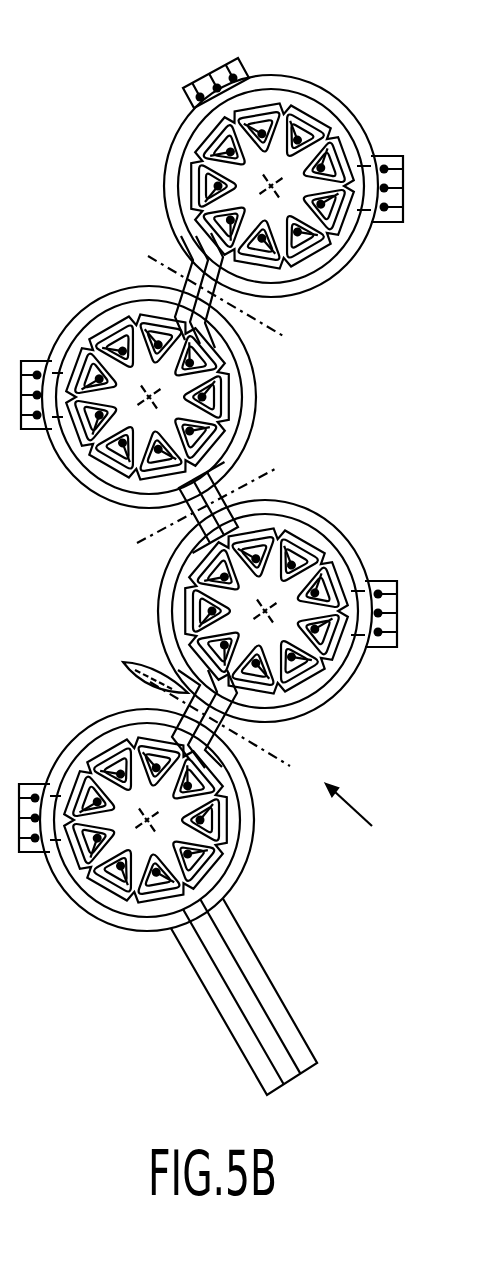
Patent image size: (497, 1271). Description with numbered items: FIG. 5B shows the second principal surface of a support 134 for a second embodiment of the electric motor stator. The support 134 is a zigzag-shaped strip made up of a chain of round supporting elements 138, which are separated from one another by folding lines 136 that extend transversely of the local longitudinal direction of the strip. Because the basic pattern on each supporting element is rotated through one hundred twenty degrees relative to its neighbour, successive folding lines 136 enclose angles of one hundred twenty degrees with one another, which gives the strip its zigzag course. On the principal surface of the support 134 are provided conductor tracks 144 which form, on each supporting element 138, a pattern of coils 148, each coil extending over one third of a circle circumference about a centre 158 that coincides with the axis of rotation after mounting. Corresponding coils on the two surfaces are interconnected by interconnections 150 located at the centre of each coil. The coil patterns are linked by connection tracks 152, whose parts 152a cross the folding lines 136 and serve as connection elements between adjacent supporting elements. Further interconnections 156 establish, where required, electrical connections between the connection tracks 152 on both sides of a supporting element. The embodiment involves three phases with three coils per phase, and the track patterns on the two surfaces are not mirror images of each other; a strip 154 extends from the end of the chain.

The support 134 is at (397, 861).
The folding lines 136 is at (266, 323).
The supporting elements 138 is at (342, 96).
The conductor tracks 144 is at (231, 972).
The second coils 148 is at (151, 888).
The interconnections 150 is at (117, 768).
The connection tracks 152 is at (226, 829).
The connection elements 152a is at (145, 664).
The cable strip 154 is at (291, 1018).
The further interconnections 156 is at (384, 582).
The centre 158 is at (113, 337).